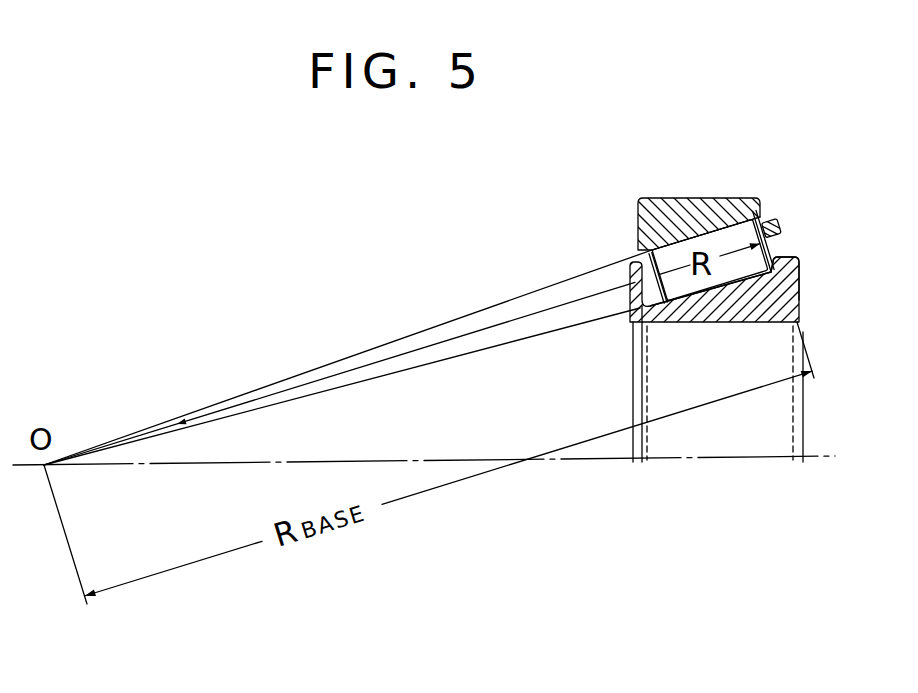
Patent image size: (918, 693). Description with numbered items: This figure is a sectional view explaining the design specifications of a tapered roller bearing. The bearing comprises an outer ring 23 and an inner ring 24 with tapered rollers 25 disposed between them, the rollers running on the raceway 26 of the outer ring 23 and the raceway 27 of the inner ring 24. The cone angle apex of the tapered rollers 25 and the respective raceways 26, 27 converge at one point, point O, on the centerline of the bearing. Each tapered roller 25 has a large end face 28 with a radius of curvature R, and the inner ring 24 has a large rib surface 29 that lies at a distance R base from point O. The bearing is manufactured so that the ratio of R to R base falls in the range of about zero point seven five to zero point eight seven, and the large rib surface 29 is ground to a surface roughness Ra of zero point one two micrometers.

The outer ring 23 is at (692, 217).
The inner ring 24 is at (685, 313).
The tapered rollers 25 is at (638, 222).
The raceway of the outer ring 26 is at (740, 228).
The raceway of the inner ring 27 is at (732, 282).
The large end faces 28 is at (785, 235).
The large rib surface 29 is at (798, 290).